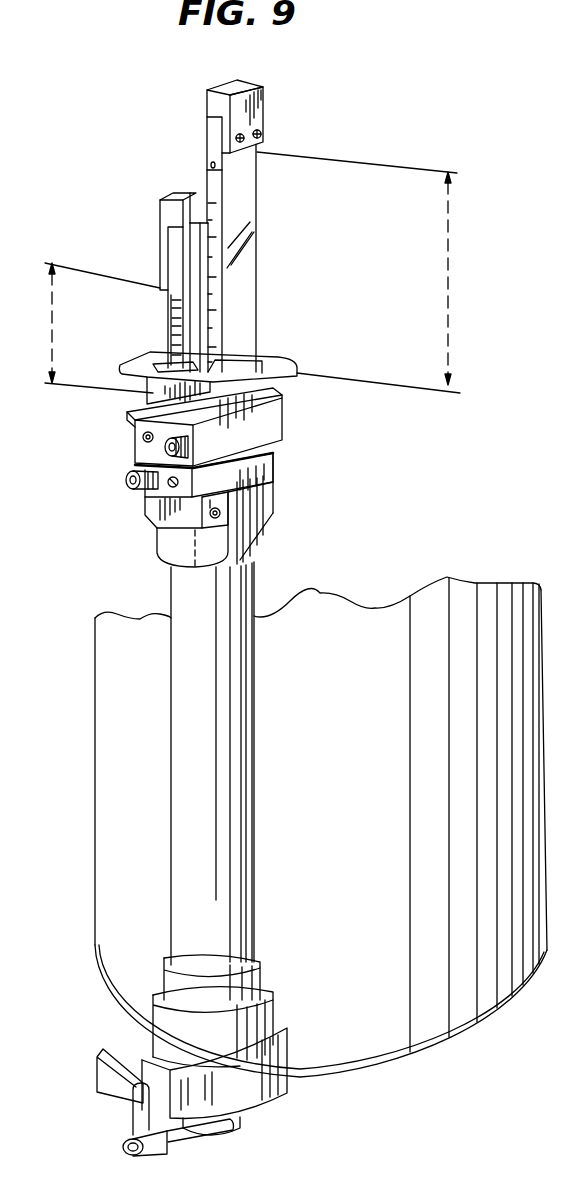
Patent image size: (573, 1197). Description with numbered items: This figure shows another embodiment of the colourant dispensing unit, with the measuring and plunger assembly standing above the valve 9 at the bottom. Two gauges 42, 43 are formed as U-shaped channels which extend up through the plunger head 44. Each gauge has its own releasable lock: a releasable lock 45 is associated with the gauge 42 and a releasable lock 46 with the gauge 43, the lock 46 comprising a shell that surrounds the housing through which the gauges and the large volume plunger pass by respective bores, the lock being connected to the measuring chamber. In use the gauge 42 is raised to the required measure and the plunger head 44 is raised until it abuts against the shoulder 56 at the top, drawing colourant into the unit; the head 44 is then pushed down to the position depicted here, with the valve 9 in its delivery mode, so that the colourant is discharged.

The valve 9 is at (130, 1110).
The gauge 42 is at (247, 252).
The gauge 43 is at (165, 292).
The plunger head 44 is at (287, 360).
The releasable lock 45 is at (257, 423).
The releasable lock 46 is at (160, 488).
The shoulder 56 is at (240, 152).